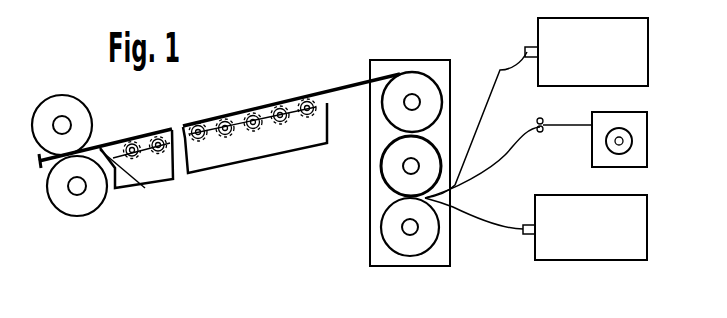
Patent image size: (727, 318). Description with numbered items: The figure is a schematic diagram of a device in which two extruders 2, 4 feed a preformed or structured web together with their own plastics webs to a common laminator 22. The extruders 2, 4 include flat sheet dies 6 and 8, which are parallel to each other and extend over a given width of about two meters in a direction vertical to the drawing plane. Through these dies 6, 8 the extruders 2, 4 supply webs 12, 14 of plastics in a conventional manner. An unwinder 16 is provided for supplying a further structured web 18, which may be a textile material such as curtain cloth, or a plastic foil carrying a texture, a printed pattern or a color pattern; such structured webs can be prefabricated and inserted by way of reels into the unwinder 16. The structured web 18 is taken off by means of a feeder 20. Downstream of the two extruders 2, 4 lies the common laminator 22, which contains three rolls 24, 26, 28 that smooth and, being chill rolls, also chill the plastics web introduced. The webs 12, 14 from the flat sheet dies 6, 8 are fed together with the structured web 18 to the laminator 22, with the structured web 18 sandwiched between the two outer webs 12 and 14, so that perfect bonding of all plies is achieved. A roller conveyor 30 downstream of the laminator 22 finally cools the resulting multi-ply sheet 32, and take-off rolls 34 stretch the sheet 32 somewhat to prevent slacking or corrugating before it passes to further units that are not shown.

The extruder 2 is at (594, 232).
The extruder 4 is at (600, 56).
The flat sheet die 6 is at (530, 235).
The flat sheet die 8 is at (528, 46).
The web 12 is at (476, 224).
The web 14 is at (500, 70).
The unwinder 16 is at (598, 149).
The structured web 18 is at (503, 158).
The feeder 20 is at (538, 134).
The common laminator 22 is at (374, 254).
The roll 24 is at (388, 228).
The roll 26 is at (383, 167).
The roll 28 is at (411, 76).
The roller conveyor 30 is at (268, 156).
The multi-ply sheet 32 is at (147, 188).
The take-off rolls 34 is at (94, 203).